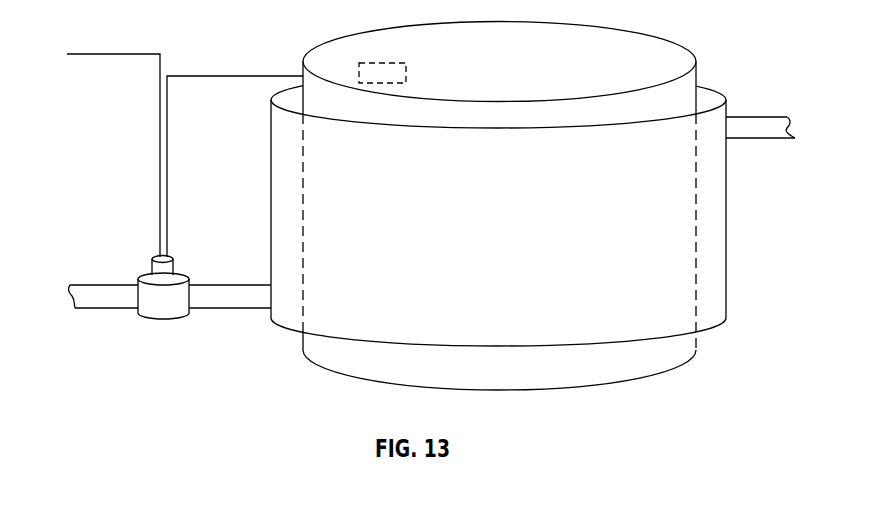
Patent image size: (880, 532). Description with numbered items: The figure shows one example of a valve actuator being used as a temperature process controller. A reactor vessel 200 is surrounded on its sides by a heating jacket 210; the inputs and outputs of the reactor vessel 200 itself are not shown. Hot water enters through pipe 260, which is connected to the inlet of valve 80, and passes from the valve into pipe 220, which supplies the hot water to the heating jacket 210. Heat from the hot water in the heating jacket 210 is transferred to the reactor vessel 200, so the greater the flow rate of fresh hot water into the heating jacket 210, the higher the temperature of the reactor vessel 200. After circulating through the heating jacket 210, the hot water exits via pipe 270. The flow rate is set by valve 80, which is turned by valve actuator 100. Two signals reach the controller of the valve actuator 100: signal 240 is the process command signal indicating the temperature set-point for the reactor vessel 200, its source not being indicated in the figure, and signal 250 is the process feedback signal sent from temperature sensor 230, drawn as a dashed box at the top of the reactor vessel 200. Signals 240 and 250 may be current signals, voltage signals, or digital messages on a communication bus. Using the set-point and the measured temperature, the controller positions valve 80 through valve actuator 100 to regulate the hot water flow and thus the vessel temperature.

The valve 80 is at (163, 305).
The valve actuator 100 is at (158, 270).
The reactor vessel 200 is at (510, 71).
The heating jacket 210 is at (510, 256).
The pipe 220 is at (233, 297).
The temperature sensor 230 is at (383, 72).
The signal 240 is at (113, 142).
The signal 250 is at (235, 153).
The pipe 260 is at (100, 298).
The pipe 270 is at (758, 128).